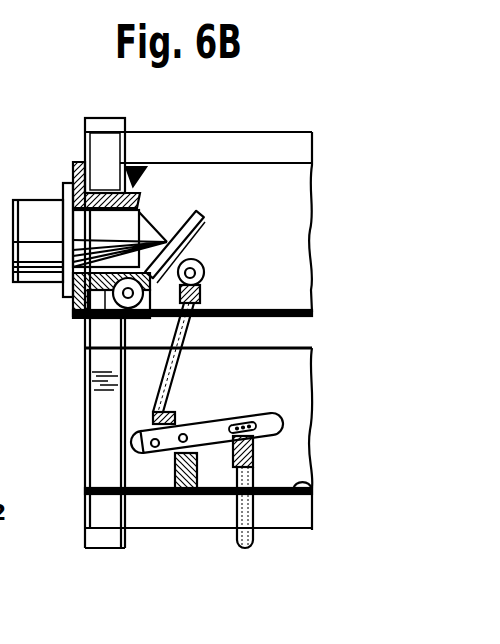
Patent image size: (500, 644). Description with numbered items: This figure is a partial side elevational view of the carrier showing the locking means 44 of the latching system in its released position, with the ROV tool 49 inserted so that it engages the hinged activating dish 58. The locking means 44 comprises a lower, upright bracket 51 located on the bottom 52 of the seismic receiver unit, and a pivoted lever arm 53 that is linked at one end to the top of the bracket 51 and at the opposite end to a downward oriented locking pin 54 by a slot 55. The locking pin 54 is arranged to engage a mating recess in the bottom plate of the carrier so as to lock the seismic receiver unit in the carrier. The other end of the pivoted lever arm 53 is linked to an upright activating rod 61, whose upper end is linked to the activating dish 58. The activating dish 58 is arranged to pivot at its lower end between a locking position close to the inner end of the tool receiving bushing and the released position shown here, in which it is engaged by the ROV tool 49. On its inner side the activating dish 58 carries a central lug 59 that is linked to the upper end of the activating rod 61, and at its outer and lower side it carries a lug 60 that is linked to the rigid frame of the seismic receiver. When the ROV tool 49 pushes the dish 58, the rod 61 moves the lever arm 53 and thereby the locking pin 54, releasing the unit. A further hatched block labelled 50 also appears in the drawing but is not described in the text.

The locking means 44 is at (140, 406).
The ROV tool 49 is at (31, 291).
The bearing block 50 is at (72, 172).
The upright bracket 51 is at (175, 461).
The bottom 52 is at (313, 487).
The pivoted lever arm 53 is at (212, 421).
The locking pin 54 is at (238, 508).
The slot 55 is at (272, 412).
The hinged activating dish 58 is at (176, 217).
The central lug 59 is at (190, 261).
The lug 60 is at (118, 300).
The upright activating rod 61 is at (192, 338).